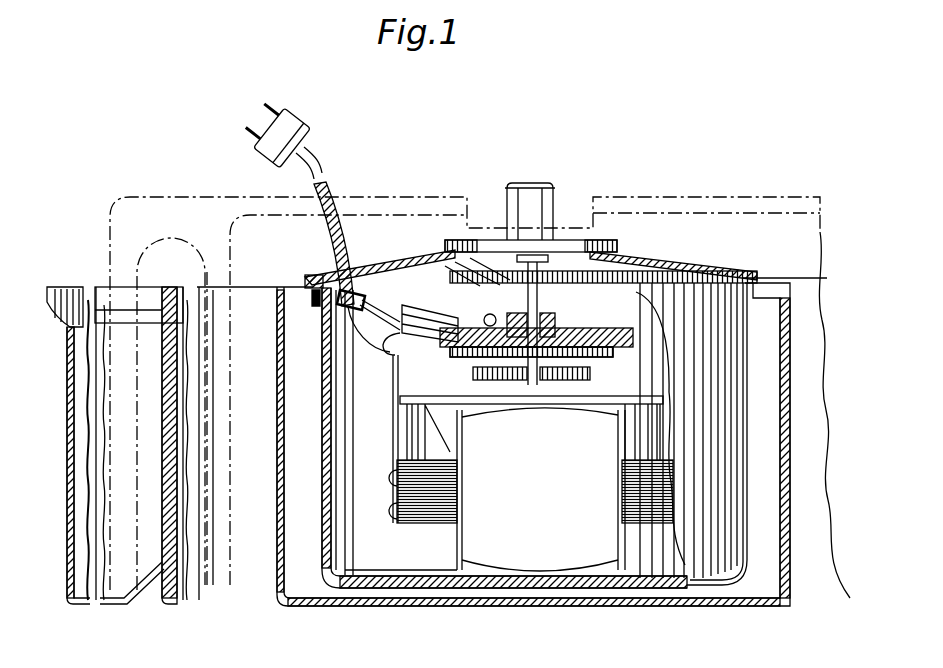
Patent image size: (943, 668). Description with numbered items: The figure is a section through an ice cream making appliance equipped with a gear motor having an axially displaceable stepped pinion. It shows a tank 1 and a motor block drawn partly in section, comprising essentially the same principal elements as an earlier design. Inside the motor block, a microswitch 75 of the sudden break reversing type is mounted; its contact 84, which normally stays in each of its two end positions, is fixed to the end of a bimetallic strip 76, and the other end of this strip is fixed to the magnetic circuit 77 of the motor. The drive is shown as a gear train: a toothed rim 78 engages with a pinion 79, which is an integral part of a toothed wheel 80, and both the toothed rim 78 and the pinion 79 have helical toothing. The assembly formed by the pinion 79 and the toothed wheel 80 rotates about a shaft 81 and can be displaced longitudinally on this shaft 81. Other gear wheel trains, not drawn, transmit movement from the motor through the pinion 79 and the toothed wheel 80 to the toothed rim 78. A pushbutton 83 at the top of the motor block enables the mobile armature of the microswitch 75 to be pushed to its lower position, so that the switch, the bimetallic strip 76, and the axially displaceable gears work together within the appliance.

The tank 1 is at (66, 287).
The microswitch 75 is at (422, 307).
The bimetallic strip 76 is at (392, 402).
The magnetic circuit 77 is at (430, 515).
The toothed rim 78 is at (607, 343).
The pinion 79 is at (556, 322).
The toothed wheel 80 is at (602, 360).
The shaft 81 is at (532, 385).
The pushbutton 83 is at (533, 287).
The contact 84 is at (488, 320).